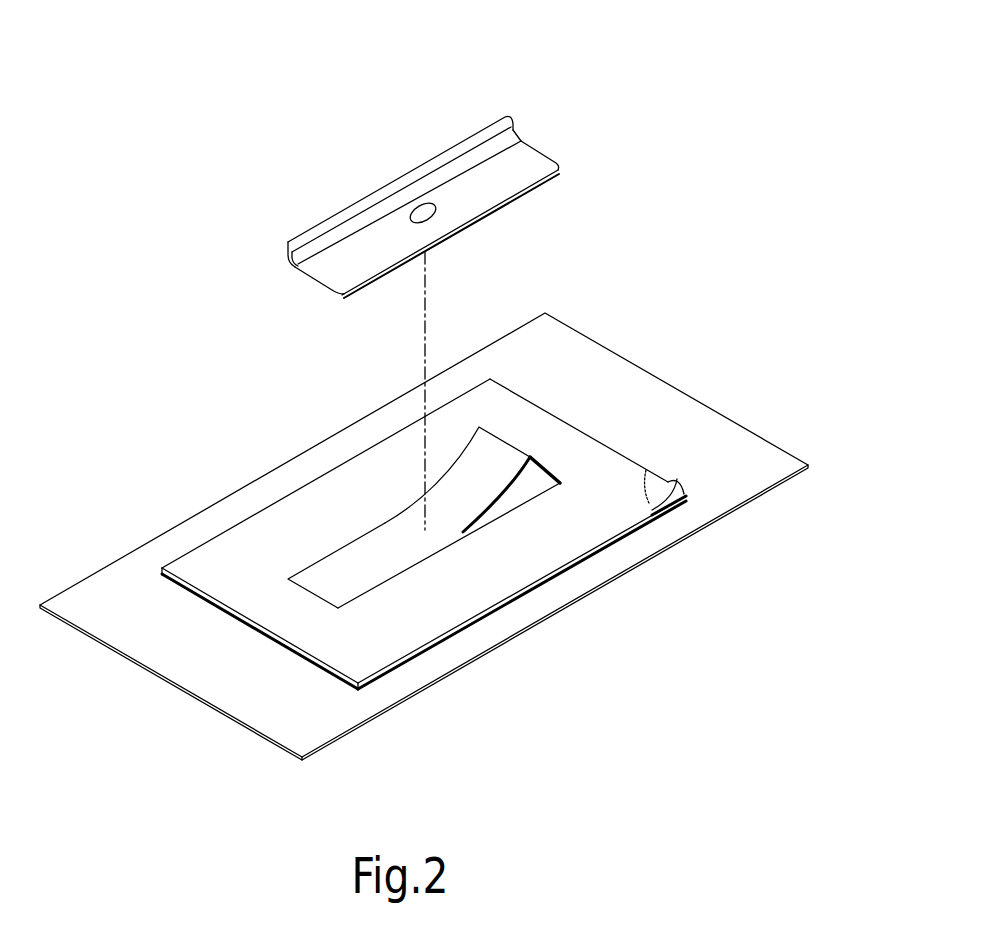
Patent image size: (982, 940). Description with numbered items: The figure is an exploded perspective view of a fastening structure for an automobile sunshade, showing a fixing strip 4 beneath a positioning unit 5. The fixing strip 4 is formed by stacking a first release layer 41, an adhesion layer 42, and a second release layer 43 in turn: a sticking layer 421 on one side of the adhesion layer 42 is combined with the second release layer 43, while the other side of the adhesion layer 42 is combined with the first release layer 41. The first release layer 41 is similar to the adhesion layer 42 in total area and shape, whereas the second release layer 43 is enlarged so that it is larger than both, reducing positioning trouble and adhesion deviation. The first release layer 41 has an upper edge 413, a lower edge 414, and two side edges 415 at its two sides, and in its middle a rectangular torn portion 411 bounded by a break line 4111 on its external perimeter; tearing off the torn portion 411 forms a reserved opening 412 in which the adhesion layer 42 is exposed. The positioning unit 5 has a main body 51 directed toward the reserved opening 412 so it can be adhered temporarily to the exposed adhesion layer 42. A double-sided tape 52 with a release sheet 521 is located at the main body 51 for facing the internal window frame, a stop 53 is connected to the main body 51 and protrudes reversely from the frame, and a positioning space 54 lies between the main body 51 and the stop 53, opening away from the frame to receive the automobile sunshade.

The fixing strip 4 is at (438, 536).
The first release layer 41 is at (462, 542).
The torn portion 411 is at (473, 600).
The break line 4111 is at (435, 558).
The reserved opening 412 is at (532, 487).
The upper edge 413 is at (370, 473).
The lower edge 414 is at (527, 547).
The side edges 415 is at (560, 448).
The adhesion layer 42 is at (740, 518).
The sticking layer 421 is at (678, 505).
The second release layer 43 is at (148, 553).
The positioning unit 5 is at (486, 271).
The main body 51 is at (525, 138).
The double-sided tape 52 is at (560, 167).
The release sheet 521 is at (558, 173).
The stop 53 is at (483, 137).
The positioning space 54 is at (523, 168).